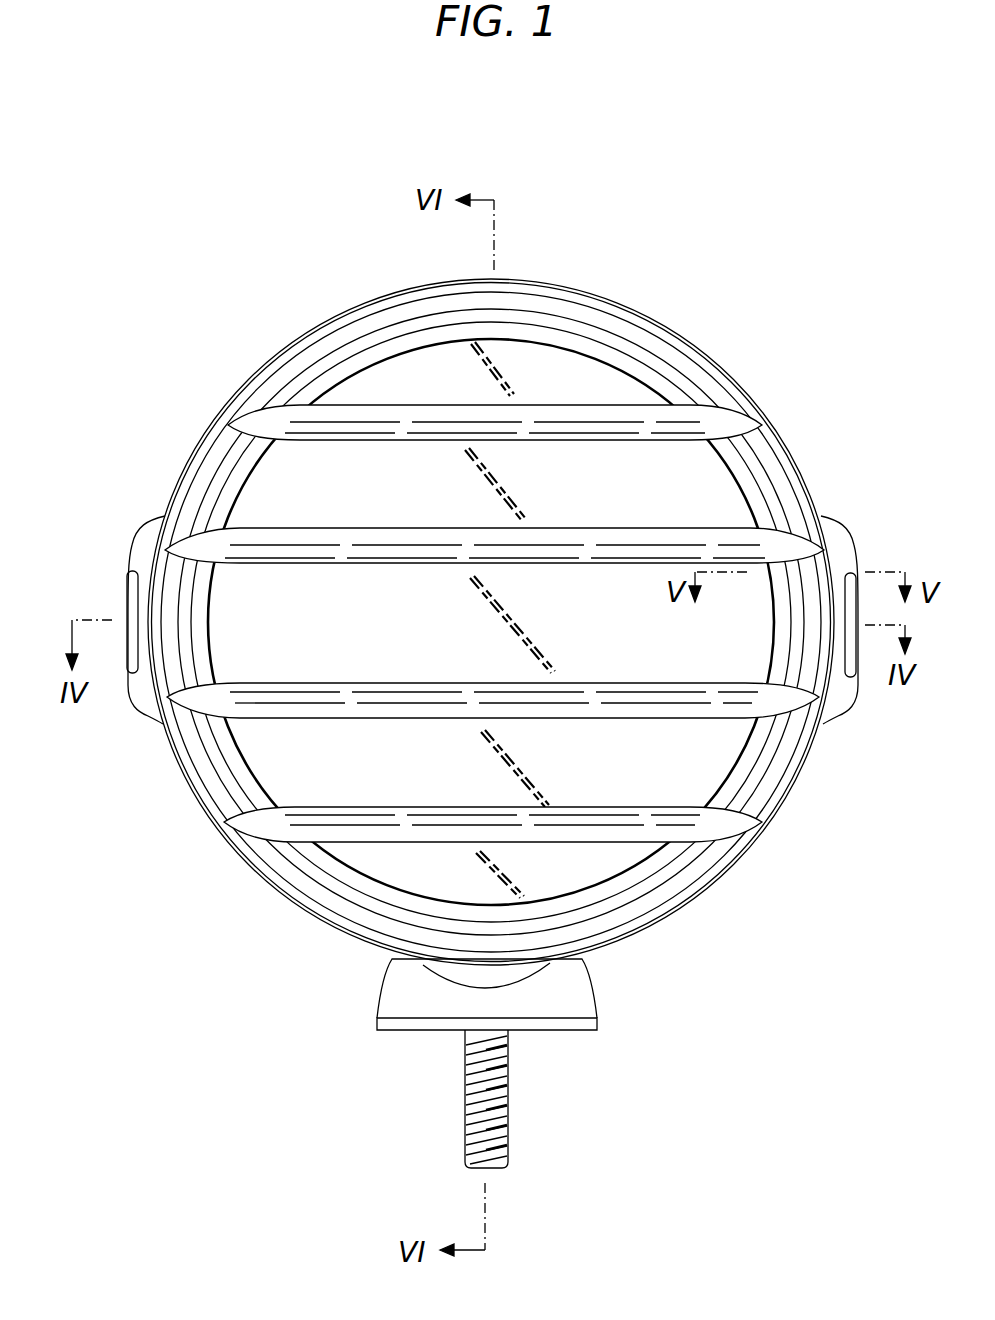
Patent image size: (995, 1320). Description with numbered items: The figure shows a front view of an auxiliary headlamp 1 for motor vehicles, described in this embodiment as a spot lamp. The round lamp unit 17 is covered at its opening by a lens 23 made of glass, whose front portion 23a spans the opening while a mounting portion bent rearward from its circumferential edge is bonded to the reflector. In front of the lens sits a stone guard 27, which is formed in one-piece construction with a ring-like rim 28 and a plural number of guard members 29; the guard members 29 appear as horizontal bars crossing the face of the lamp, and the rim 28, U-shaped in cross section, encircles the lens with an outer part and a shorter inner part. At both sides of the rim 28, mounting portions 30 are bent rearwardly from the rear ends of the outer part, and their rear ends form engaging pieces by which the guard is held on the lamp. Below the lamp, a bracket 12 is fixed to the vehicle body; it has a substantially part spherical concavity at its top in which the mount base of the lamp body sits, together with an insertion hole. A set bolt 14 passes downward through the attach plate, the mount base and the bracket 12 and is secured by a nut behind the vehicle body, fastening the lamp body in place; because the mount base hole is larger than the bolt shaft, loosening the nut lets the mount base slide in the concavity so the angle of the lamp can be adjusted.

The auxiliary headlamp 1 is at (490, 661).
The bracket 12 is at (582, 997).
The set bolt 14 is at (470, 1083).
The lamp unit 17 is at (718, 487).
The lens 23 is at (723, 740).
The front portion 23a is at (698, 775).
The stone guard 27 is at (303, 337).
The rim 28 is at (213, 438).
The guard members 29 is at (611, 426).
The mounting portions 30 is at (140, 710).